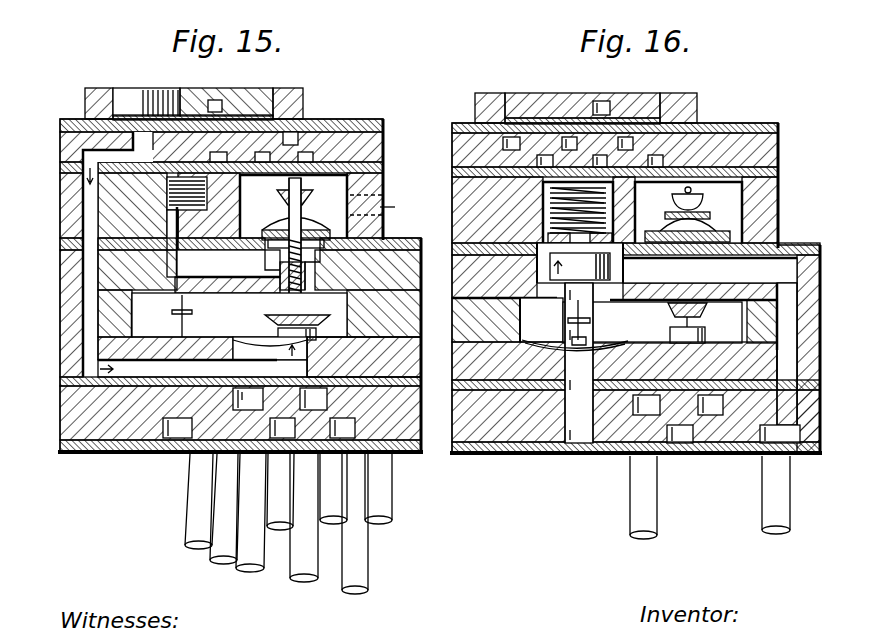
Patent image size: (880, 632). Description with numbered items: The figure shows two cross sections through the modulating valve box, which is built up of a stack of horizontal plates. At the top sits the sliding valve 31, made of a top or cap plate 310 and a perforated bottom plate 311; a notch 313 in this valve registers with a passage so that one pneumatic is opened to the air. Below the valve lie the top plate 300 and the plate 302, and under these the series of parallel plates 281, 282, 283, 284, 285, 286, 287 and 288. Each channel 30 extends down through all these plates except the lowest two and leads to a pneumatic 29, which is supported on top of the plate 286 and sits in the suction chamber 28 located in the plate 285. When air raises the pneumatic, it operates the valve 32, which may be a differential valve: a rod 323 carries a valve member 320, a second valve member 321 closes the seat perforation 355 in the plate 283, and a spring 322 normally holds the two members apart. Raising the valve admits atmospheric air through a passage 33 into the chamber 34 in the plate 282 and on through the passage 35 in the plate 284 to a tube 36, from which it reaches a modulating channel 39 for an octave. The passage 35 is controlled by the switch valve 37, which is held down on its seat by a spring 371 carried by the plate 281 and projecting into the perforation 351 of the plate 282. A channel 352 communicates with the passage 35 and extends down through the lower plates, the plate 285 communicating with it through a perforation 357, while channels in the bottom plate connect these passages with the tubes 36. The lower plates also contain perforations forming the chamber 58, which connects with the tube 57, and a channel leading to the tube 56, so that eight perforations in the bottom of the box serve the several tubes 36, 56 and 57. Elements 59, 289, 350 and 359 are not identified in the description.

In FIG. 15, the suction chamber 28 is at (239, 315).
In FIG. 16, the suction chamber 28 is at (652, 322).
In FIG. 15, the pneumatic 29 is at (287, 339).
In FIG. 15, the channel 30 is at (90, 198).
In FIG. 16, the sliding valve 31 is at (522, 93).
In FIG. 15, the valve 32 is at (288, 275).
In FIG. 15, the passage 33 is at (392, 210).
In FIG. 16, the chamber 34 is at (706, 183).
In FIG. 15, the passage 35 is at (228, 263).
In FIG. 15, the tube 36 is at (377, 508).
In FIG. 16, the tube 36 is at (762, 508).
In FIG. 16, the switch valve 37 is at (612, 270).
In FIG. 15, the modulating channel 39 is at (343, 216).
In FIG. 15, the tube 56 is at (200, 500).
In FIG. 15, the tube 57 is at (218, 548).
In FIG. 16, the tube 57 is at (645, 522).
In FIG. 15, the chamber 58 is at (137, 452).
In FIG. 16, the chamber 58 is at (584, 453).
In FIG. 16, the deflector 59 is at (594, 349).
In FIG. 15, the plate 281 is at (360, 166).
In FIG. 16, the plate 281 is at (780, 172).
In FIG. 15, the plate 282 is at (372, 186).
In FIG. 16, the plate 282 is at (768, 197).
In FIG. 15, the plate 283 is at (398, 250).
In FIG. 16, the plate 283 is at (636, 231).
In FIG. 15, the plate 284 is at (406, 269).
In FIG. 16, the plate 284 is at (616, 277).
In FIG. 15, the plate 285 is at (402, 335).
In FIG. 16, the plate 285 is at (505, 340).
In FIG. 15, the plate 286 is at (402, 380).
In FIG. 16, the plate 286 is at (548, 357).
In FIG. 15, the plate 287 is at (403, 393).
In FIG. 16, the plate 287 is at (556, 345).
In FIG. 15, the bottom plate 288 is at (421, 440).
In FIG. 16, the bottom plate 288 is at (560, 440).
In FIG. 16, the side wall 289 is at (812, 275).
In FIG. 15, the top plate 300 is at (302, 128).
In FIG. 16, the top plate 300 is at (772, 130).
In FIG. 15, the plate 302 is at (358, 135).
In FIG. 16, the plate 302 is at (772, 146).
In FIG. 15, the top plate 310 is at (243, 89).
In FIG. 16, the top plate 310 is at (660, 94).
In FIG. 15, the bottom plate 311 is at (187, 192).
In FIG. 16, the bottom plate 311 is at (698, 101).
In FIG. 15, the notch 313 is at (98, 95).
In FIG. 15, the valve member 320 is at (280, 332).
In FIG. 16, the valve member 320 is at (706, 318).
In FIG. 15, the valve member 321 is at (314, 216).
In FIG. 16, the valve member 321 is at (712, 228).
In FIG. 15, the spring 322 is at (307, 257).
In FIG. 15, the rod 323 is at (304, 167).
In FIG. 15, the nozzle cone 350 is at (270, 320).
In FIG. 16, the perforation 351 is at (610, 194).
In FIG. 16, the channel 352 is at (710, 341).
In FIG. 15, the perforation 355 is at (288, 217).
In FIG. 16, the perforation 357 is at (575, 303).
In FIG. 15, the valve cavity 359 is at (293, 206).
In FIG. 15, the spring 371 is at (125, 108).
In FIG. 16, the spring 371 is at (608, 212).